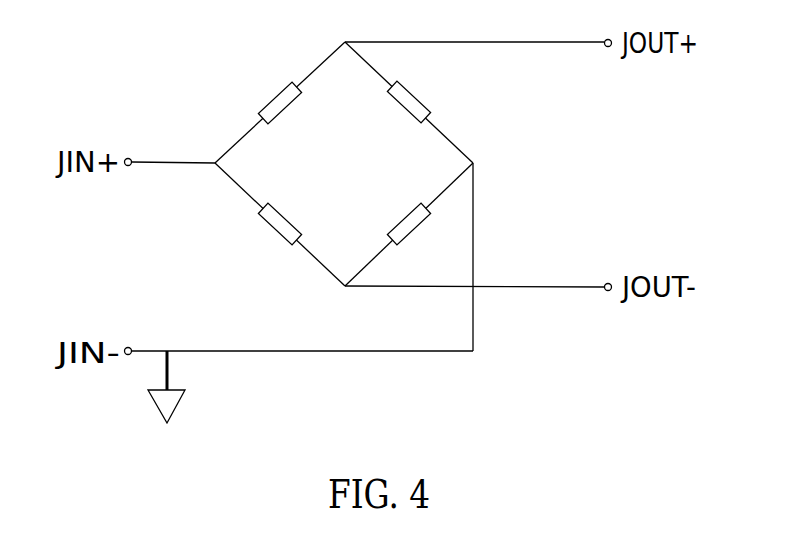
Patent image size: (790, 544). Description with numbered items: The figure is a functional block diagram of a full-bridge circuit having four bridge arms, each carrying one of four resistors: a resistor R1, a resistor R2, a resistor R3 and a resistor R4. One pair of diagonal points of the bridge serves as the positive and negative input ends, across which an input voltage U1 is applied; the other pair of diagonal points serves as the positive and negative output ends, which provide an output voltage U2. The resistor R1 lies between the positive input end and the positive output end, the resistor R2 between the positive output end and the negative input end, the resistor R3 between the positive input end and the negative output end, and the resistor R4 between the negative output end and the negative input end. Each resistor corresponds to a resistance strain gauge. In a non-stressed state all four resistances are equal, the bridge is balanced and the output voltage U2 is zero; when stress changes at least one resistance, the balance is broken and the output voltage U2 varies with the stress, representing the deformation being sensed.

The resistor R1 is at (280, 102).
The resistor R2 is at (409, 102).
The resistor R3 is at (280, 224).
The resistor R4 is at (409, 224).
The input voltage U1 is at (127, 263).
The output voltage U2 is at (605, 158).